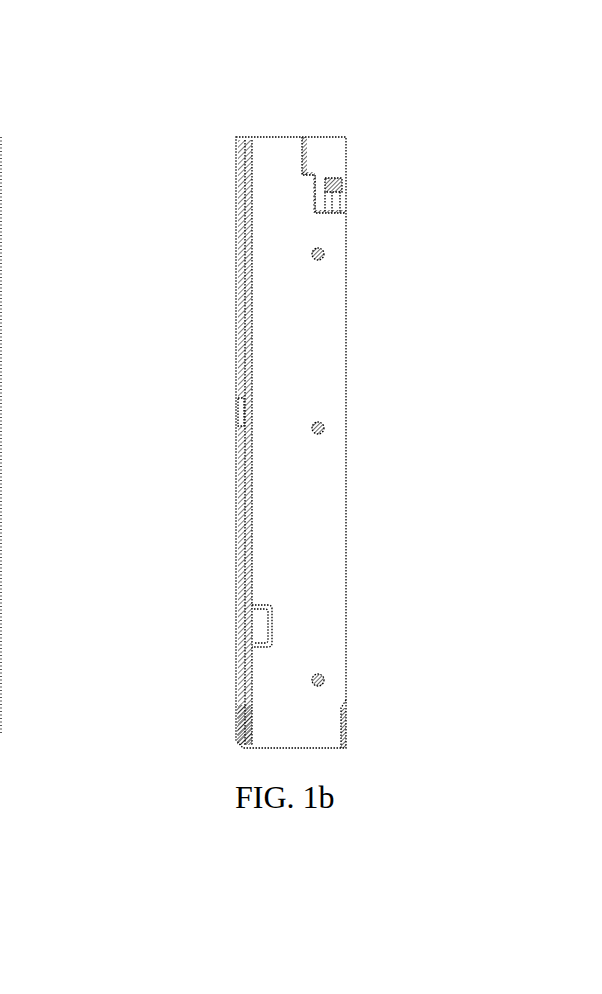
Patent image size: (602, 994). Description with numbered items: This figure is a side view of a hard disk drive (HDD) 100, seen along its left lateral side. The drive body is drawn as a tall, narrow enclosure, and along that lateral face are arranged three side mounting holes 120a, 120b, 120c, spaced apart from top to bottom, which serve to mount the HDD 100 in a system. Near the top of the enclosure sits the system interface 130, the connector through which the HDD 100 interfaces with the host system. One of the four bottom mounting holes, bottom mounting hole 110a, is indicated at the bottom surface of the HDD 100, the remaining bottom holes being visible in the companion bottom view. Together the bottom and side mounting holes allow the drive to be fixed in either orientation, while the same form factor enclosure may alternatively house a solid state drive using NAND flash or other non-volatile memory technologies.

The hard disk drive 100 is at (233, 273).
The bottom mounting hole 110a is at (0, 302).
The side mounting hole 120a is at (324, 254).
The side mounting hole 120b is at (324, 428).
The side mounting hole 120c is at (324, 680).
The system interface 130 is at (328, 130).